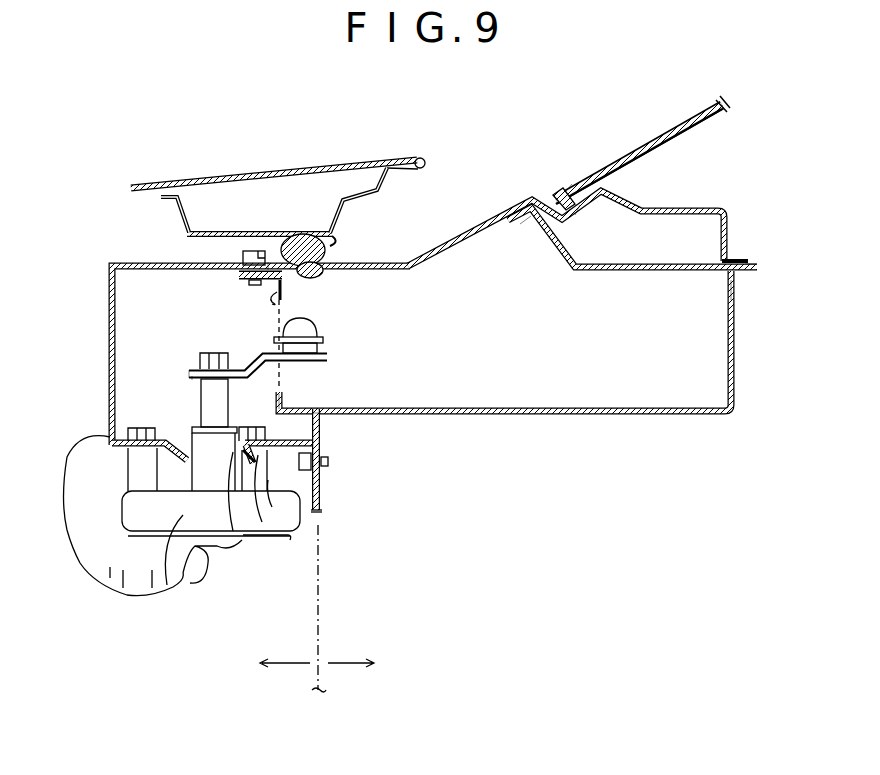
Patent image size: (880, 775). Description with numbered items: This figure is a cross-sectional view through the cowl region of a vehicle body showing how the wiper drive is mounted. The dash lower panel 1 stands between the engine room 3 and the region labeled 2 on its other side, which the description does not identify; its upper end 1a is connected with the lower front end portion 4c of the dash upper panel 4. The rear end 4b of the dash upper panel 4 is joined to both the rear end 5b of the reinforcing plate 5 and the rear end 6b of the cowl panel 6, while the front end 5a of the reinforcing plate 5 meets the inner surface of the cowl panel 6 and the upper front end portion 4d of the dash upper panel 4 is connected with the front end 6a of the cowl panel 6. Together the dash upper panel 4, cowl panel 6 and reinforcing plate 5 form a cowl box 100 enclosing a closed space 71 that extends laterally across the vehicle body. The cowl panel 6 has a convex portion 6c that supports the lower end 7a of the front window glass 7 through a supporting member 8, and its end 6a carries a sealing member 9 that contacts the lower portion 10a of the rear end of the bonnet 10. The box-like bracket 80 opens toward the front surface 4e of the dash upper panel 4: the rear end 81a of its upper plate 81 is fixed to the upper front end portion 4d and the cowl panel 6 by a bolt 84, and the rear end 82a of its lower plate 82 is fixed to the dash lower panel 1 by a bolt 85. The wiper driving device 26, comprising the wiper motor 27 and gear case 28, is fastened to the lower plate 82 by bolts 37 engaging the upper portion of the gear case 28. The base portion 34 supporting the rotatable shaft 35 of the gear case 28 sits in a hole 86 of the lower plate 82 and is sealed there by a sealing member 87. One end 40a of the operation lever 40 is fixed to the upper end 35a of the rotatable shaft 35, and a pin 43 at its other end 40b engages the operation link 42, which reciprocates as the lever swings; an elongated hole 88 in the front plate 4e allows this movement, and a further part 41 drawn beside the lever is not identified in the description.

The dash lower panel 1 is at (327, 484).
The upper end of dash lower panel 1a is at (322, 428).
The engine compartment side 2 is at (552, 582).
The engine room 3 is at (137, 675).
The dash upper panel 4 is at (678, 414).
The rear end of dash upper panel 4b is at (745, 284).
The lower front end portion of dash upper panel 4c is at (288, 404).
The upper front end portion of dash upper panel 4d is at (241, 281).
The front surface of dash upper panel 4e is at (276, 295).
The reinforcing plate 5 is at (690, 272).
The front end of reinforcing plate 5a is at (523, 225).
The rear end of reinforcing plate 5b is at (757, 265).
The cowl panel 6 is at (470, 236).
The front end of cowl panel 6a is at (314, 264).
The rear end of cowl panel 6b is at (736, 257).
The convex portion of cowl panel 6c is at (580, 207).
The front window glass 7 is at (705, 116).
The lower end of front window glass 7a is at (575, 190).
The supporting member 8 is at (575, 188).
The sealing member 9 is at (326, 246).
The bonnet 10 is at (336, 158).
The lower portion of rear end of bonnet 10a is at (287, 231).
The wiper driving device 26 is at (245, 553).
The wiper motor 27 is at (117, 573).
The gear case 28 is at (168, 560).
The base portion 34 is at (208, 473).
The rotatable shaft 35 is at (207, 415).
The upper end of rotatable shaft 35a is at (193, 378).
The bolts 37 is at (124, 428).
The operation lever 40 is at (288, 368).
The one end of operation lever 40a is at (191, 368).
The other end of operation lever 40b is at (320, 349).
The nut 41 is at (220, 353).
The operation link 42 is at (325, 340).
The pin 43 is at (305, 326).
The closed space 71 is at (555, 350).
The bracket 80 is at (120, 246).
The upper plate of bracket 81 is at (155, 262).
The rear end of upper plate 81a is at (270, 264).
The lower plate of bracket 82 is at (168, 438).
The rear end of lower plate 82a is at (332, 463).
The bolt 84 is at (247, 250).
The bolt 85 is at (322, 509).
The hole 86 is at (197, 467).
The sealing member 87 is at (258, 540).
The elongated hole 88 is at (284, 307).
The cowl box 100 is at (633, 375).